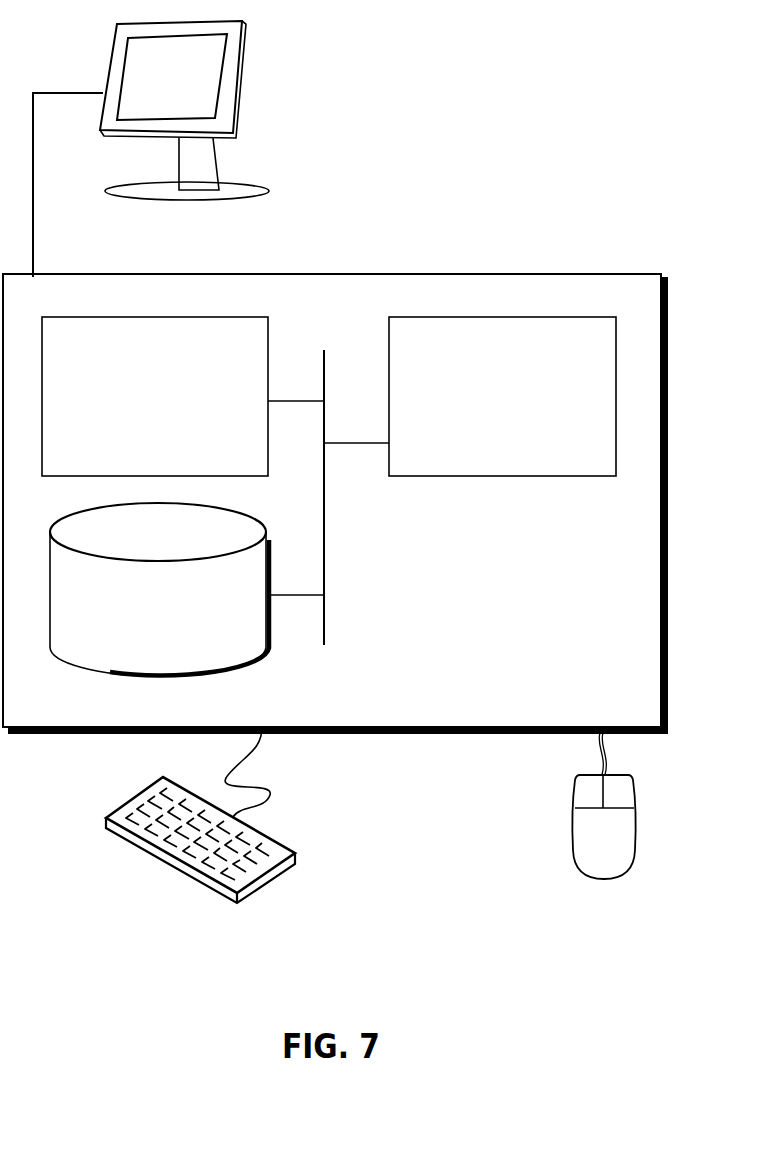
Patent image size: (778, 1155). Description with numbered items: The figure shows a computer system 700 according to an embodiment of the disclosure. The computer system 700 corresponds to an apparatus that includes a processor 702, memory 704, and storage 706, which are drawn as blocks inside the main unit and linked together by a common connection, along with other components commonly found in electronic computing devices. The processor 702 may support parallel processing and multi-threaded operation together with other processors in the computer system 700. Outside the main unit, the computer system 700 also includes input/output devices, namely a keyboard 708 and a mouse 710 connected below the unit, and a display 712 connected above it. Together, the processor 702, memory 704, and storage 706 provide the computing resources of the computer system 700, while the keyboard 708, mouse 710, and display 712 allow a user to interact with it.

The computer system 700 is at (379, 252).
The processor 702 is at (525, 410).
The memory 704 is at (175, 407).
The storage 706 is at (180, 617).
The keyboard 708 is at (127, 842).
The mouse 710 is at (625, 849).
The display 712 is at (151, 149).